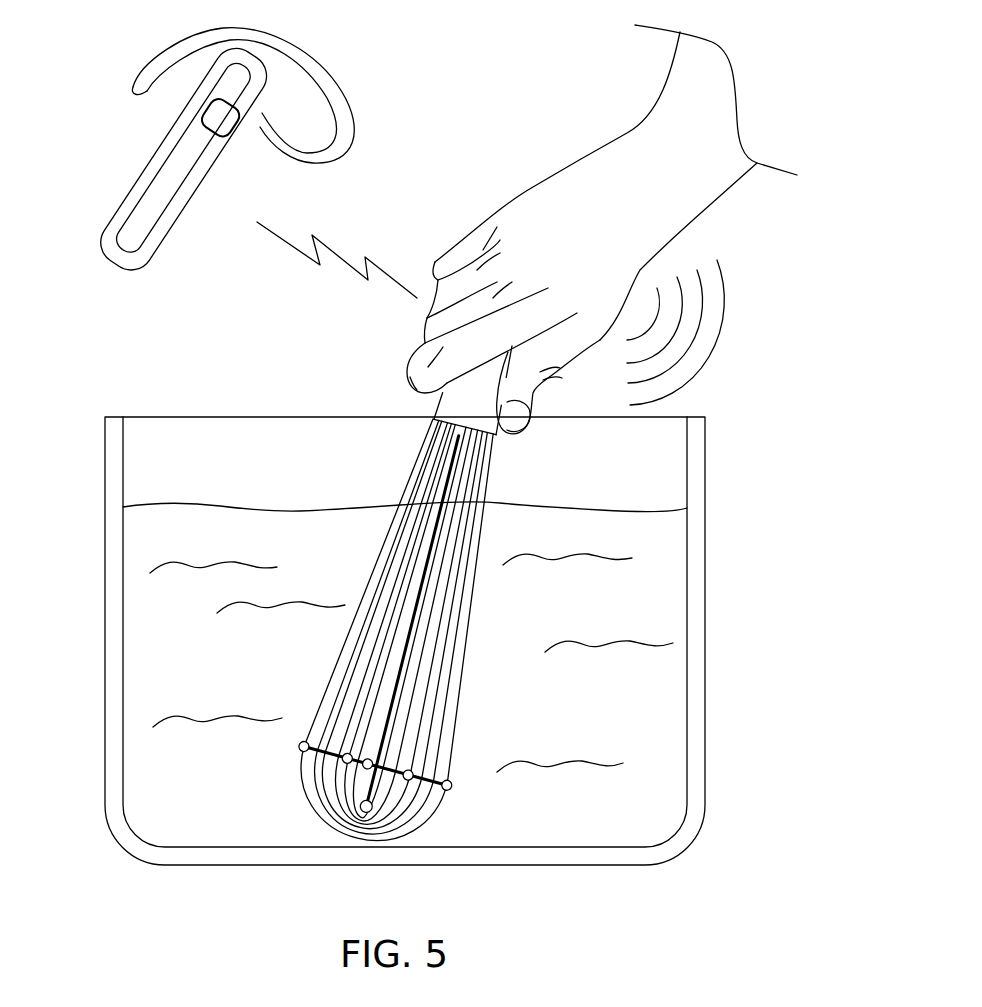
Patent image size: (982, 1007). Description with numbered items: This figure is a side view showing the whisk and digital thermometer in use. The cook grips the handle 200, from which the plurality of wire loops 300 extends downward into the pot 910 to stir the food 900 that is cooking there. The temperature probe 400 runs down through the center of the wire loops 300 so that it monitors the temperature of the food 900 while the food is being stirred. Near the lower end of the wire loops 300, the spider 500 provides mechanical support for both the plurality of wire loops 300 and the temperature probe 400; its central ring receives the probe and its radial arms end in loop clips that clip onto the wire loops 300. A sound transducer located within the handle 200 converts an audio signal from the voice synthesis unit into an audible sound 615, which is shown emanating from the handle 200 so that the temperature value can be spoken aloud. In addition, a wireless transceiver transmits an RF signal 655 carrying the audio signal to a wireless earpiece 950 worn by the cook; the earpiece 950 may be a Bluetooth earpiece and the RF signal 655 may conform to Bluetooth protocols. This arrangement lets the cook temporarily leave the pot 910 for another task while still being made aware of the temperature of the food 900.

The wireless earpiece 950 is at (132, 187).
The RF signal 655 is at (316, 263).
The handle 200 is at (455, 400).
The plurality of wire loops 300 is at (410, 490).
The temperature probe 400 is at (418, 605).
The spider 500 is at (387, 766).
The audible sound 615 is at (723, 318).
The pot 910 is at (702, 428).
The food 900 is at (637, 598).